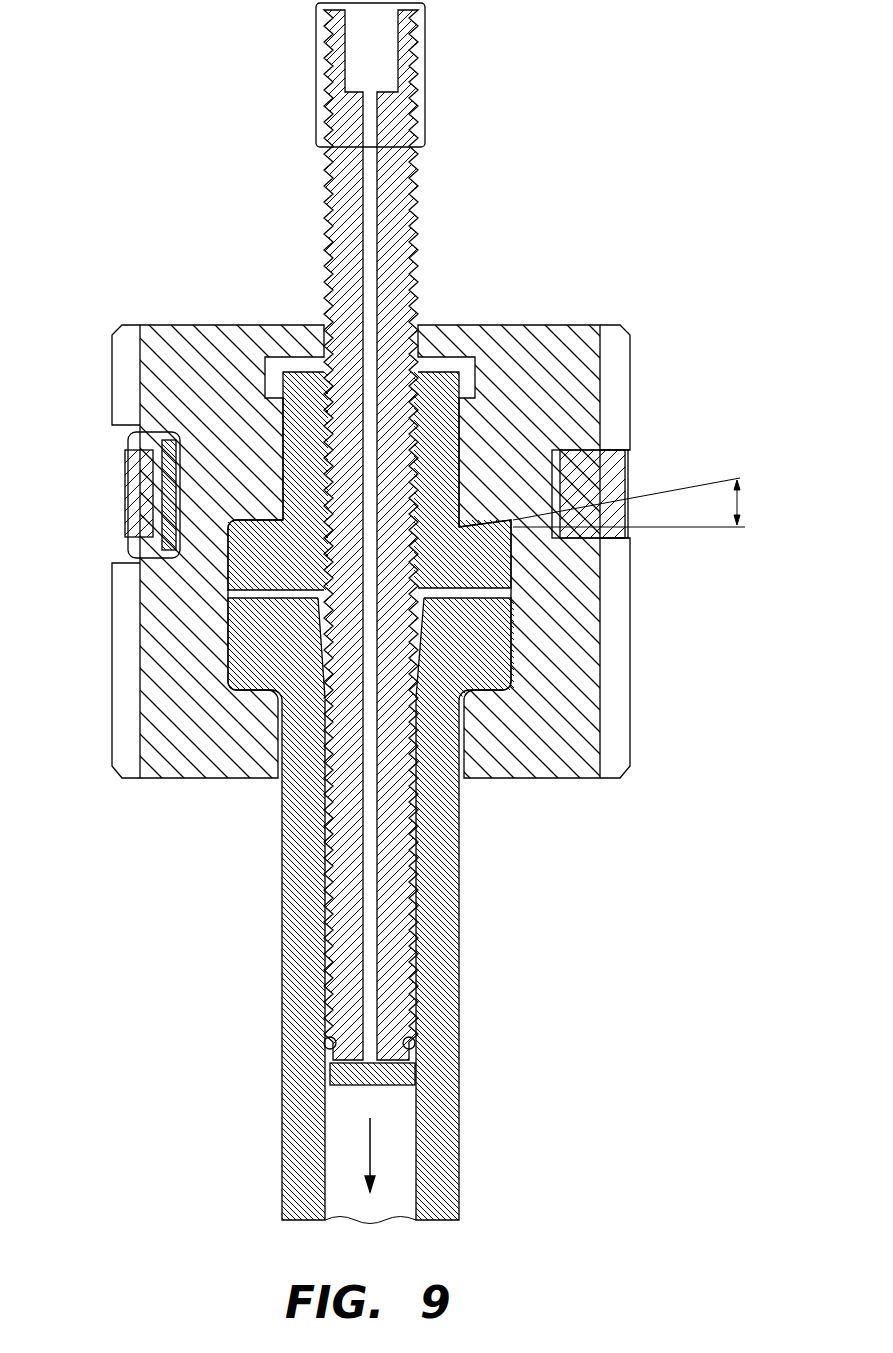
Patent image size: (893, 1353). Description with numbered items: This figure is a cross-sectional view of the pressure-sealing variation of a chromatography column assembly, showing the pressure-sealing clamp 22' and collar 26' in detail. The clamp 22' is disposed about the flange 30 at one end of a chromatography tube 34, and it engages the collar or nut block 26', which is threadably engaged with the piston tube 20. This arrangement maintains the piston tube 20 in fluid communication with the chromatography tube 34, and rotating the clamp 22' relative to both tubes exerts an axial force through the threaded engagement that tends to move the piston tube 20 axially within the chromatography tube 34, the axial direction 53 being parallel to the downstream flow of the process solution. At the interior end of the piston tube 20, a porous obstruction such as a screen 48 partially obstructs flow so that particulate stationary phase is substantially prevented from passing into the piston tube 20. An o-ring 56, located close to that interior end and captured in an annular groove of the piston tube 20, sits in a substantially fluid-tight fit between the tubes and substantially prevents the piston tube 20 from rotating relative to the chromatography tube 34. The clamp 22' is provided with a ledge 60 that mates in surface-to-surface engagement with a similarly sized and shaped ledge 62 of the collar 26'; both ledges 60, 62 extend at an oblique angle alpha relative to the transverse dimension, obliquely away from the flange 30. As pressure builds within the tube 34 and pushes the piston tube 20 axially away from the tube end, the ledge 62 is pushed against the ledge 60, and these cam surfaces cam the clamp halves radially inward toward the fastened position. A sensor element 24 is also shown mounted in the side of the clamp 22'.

The piston tube 20 is at (412, 179).
The pressure-sealing clamp 22' is at (436, 511).
The sensor 24 is at (132, 492).
The collar 26' is at (352, 481).
The flange 30 is at (246, 649).
The chromatography tube 34 is at (446, 1196).
The screen 48 is at (398, 1073).
The axial direction 53 is at (370, 1150).
The o-ring 56 is at (412, 1043).
The ledge 60 is at (248, 521).
The ledge 62 is at (484, 522).